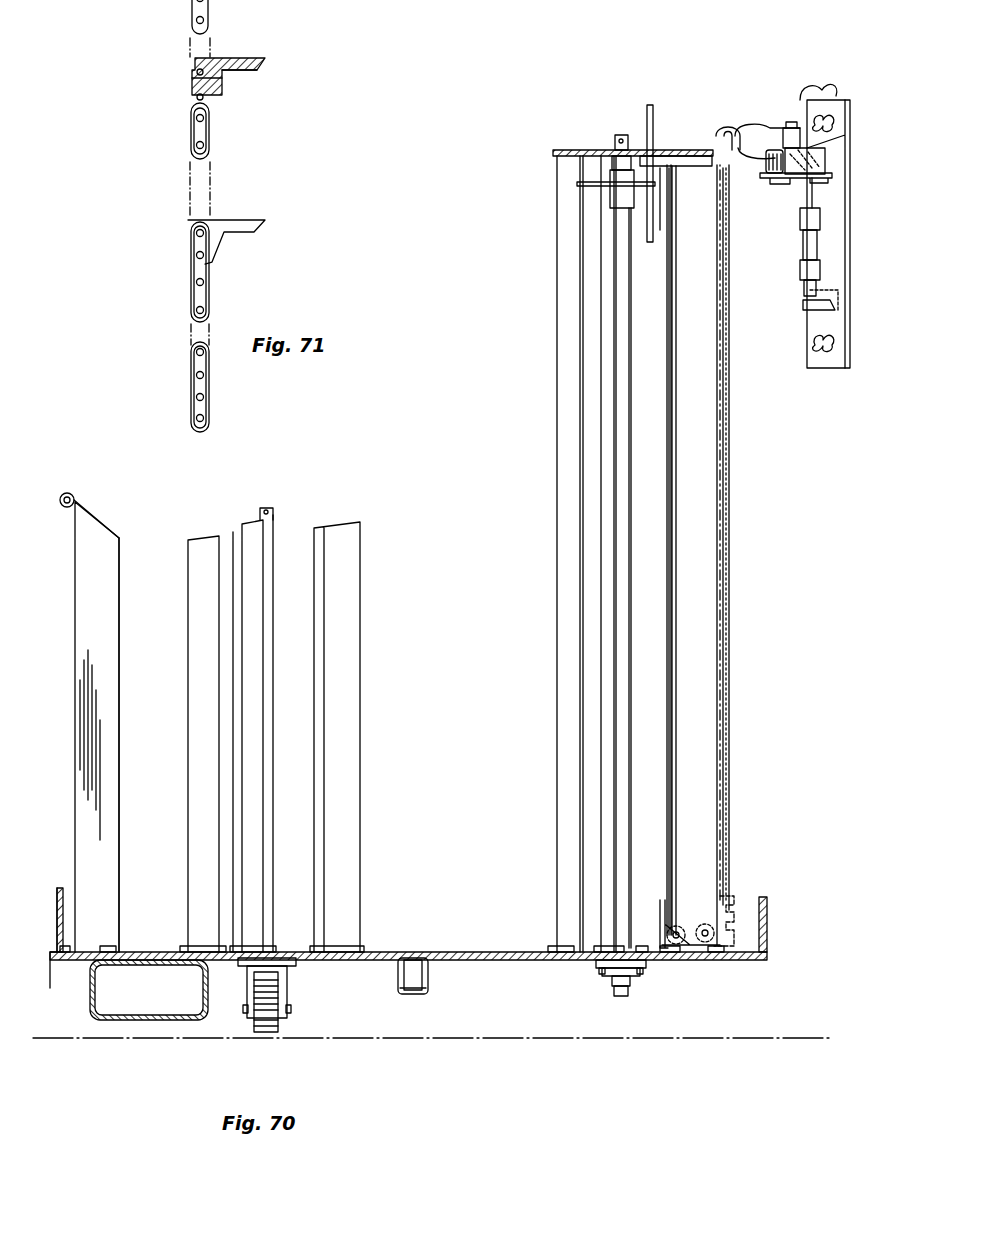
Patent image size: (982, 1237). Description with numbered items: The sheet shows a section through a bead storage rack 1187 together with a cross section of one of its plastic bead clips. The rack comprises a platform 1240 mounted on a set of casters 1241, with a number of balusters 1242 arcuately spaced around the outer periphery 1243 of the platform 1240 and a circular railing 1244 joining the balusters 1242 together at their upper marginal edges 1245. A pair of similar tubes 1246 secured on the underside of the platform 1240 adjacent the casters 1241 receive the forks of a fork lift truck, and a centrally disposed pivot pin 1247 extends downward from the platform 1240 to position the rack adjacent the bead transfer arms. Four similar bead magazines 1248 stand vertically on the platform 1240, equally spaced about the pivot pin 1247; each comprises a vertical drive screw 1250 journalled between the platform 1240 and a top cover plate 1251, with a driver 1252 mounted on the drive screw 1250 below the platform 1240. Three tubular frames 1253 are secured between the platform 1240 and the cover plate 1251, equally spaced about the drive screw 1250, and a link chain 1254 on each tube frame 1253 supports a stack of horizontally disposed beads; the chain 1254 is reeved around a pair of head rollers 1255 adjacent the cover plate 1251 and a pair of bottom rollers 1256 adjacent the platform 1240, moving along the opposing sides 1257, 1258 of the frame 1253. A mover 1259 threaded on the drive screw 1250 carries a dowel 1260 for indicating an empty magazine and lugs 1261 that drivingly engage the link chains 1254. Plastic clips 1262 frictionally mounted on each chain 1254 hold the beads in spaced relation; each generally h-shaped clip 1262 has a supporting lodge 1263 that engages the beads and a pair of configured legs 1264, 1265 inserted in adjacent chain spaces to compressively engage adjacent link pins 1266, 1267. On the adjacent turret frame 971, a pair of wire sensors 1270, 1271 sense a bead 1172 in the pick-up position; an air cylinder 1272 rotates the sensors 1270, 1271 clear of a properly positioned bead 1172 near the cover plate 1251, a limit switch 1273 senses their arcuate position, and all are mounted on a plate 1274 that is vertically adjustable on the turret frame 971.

In FIG. 70, the turret frame 971 is at (850, 204).
In FIG. 70, the bead 1172 is at (736, 165).
In FIG. 70, the bead storage rack 1187 is at (75, 601).
In FIG. 70, the platform 1240 is at (480, 950).
In FIG. 70, the casters 1241 is at (286, 992).
In FIG. 70, the balusters 1242 is at (148, 638).
In FIG. 70, the outer periphery 1243 is at (62, 942).
In FIG. 70, the circular railing 1244 is at (66, 494).
In FIG. 70, the upper marginal edges 1245 is at (97, 512).
In FIG. 70, the tubes 1246 is at (90, 1000).
In FIG. 70, the pivot pin 1247 is at (428, 984).
In FIG. 70, the bead magazine 1248 is at (188, 594).
In FIG. 70, the drive screw 1250 is at (266, 512).
In FIG. 70, the top cover plate 1251 is at (582, 150).
In FIG. 70, the driver 1252 is at (597, 988).
In FIG. 70, the tubular frame 1253 is at (720, 468).
In FIG. 71, the link chain 1254 is at (192, 128).
In FIG. 70, the link chain 1254 is at (722, 882).
In FIG. 70, the head rollers 1255 is at (716, 176).
In FIG. 70, the bottom rollers 1256 is at (688, 960).
In FIG. 70, the side 1257 is at (722, 498).
In FIG. 70, the side 1258 is at (671, 537).
In FIG. 70, the mover 1259 is at (610, 198).
In FIG. 70, the dowel 1260 is at (652, 242).
In FIG. 70, the lugs 1261 is at (657, 214).
In FIG. 71, the plastic clip 1262 is at (240, 58).
In FIG. 70, the plastic clip 1262 is at (733, 900).
In FIG. 71, the supporting lodge 1263 is at (263, 62).
In FIG. 71, the leg 1264 is at (195, 42).
In FIG. 71, the leg 1265 is at (193, 80).
In FIG. 71, the link pin 1266 is at (195, 68).
In FIG. 71, the link pin 1267 is at (193, 97).
In FIG. 70, the wire sensor 1270 is at (723, 140).
In FIG. 70, the wire sensor 1271 is at (716, 138).
In FIG. 70, the air cylinder 1272 is at (806, 248).
In FIG. 70, the limit switch 1273 is at (790, 128).
In FIG. 70, the plate 1274 is at (845, 243).